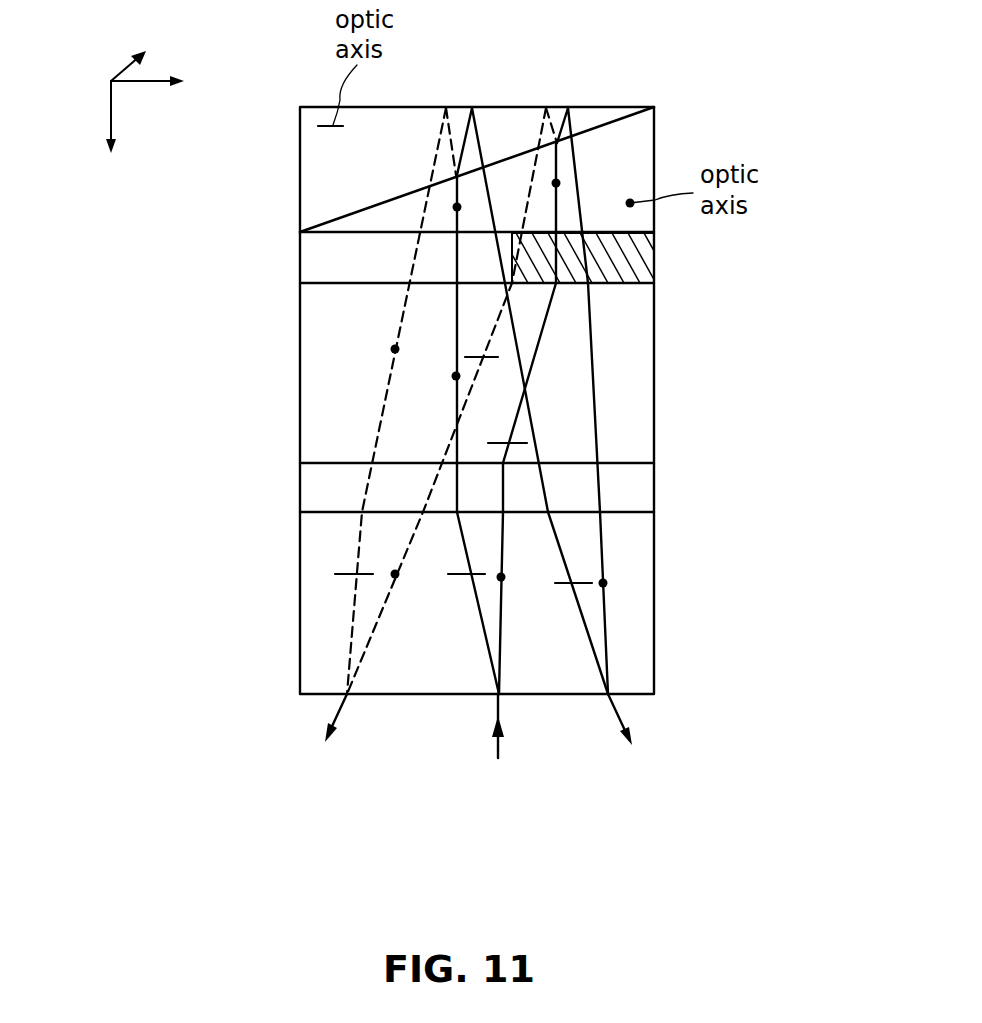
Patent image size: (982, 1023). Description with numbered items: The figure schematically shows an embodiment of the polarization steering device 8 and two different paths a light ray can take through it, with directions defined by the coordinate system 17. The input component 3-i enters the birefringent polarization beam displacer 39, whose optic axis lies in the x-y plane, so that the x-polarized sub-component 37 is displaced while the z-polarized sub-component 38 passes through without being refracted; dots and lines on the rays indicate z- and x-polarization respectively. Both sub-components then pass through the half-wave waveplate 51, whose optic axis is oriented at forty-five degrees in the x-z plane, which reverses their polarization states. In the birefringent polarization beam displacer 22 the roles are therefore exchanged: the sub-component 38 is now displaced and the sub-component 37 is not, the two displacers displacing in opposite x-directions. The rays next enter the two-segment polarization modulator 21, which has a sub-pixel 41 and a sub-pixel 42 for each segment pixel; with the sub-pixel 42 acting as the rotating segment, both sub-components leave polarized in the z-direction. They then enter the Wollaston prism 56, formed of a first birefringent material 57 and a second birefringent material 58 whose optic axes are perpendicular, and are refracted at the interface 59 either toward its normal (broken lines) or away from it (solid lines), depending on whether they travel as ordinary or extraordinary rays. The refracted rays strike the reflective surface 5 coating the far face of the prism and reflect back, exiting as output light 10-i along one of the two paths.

The polarization steering device 8 is at (800, 58).
The coordinate system 17 is at (90, 43).
The interface 59 is at (603, 118).
The second birefringent material 58 is at (317, 163).
The sub-pixel 41 is at (317, 258).
The two-segment polarization modulator 21 is at (661, 235).
The sub-pixel 42 is at (623, 275).
The first birefringent material 57 is at (640, 137).
The Wollaston prism 56 is at (762, 108).
The birefringent polarization beam displacer 22 is at (640, 383).
The half-wave waveplate 51 is at (640, 490).
The birefringent polarization beam displacer 39 is at (642, 560).
The sub-component 37 is at (477, 617).
The sub-component 38 is at (502, 615).
The reflective surface 5 is at (433, 107).
The output light ray 10-i is at (484, 447).
The input component 3-i is at (496, 743).